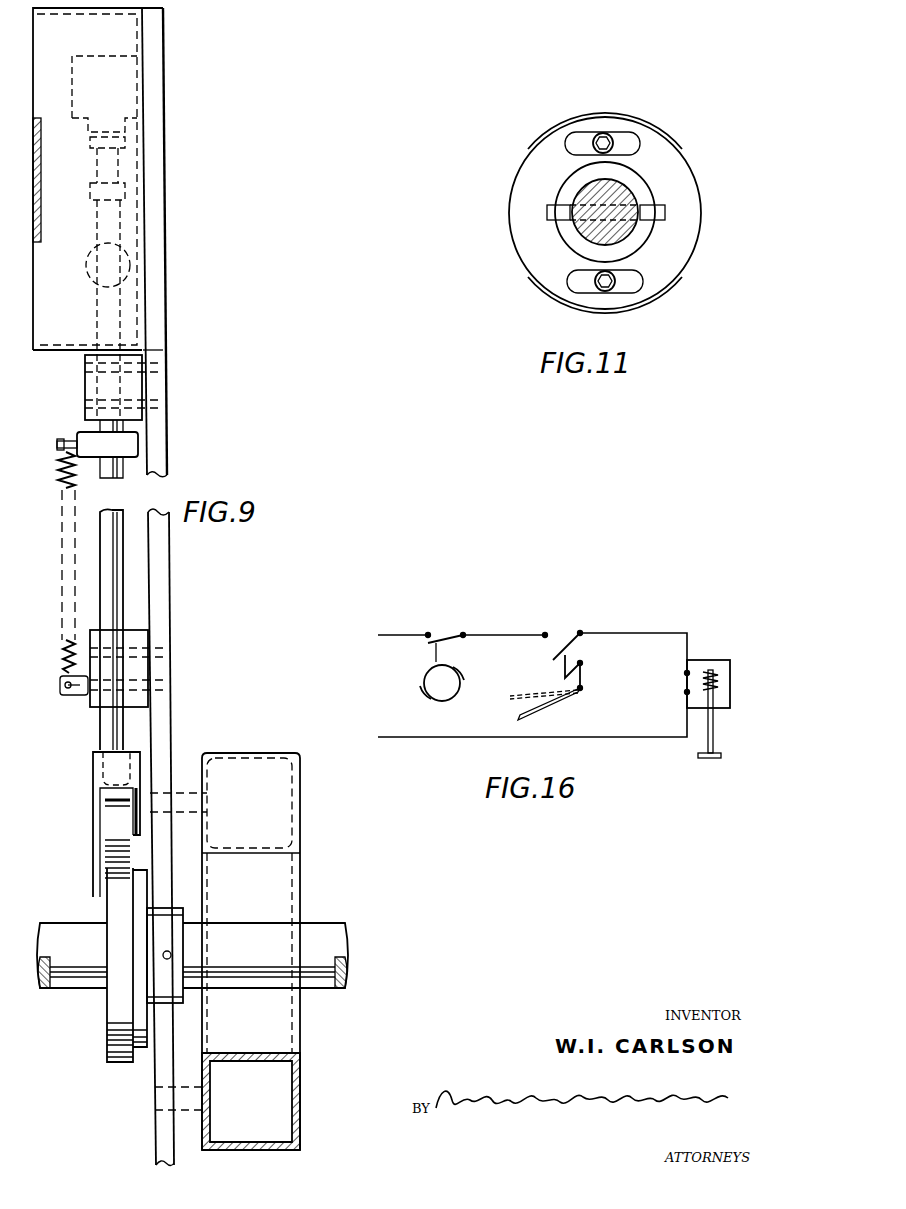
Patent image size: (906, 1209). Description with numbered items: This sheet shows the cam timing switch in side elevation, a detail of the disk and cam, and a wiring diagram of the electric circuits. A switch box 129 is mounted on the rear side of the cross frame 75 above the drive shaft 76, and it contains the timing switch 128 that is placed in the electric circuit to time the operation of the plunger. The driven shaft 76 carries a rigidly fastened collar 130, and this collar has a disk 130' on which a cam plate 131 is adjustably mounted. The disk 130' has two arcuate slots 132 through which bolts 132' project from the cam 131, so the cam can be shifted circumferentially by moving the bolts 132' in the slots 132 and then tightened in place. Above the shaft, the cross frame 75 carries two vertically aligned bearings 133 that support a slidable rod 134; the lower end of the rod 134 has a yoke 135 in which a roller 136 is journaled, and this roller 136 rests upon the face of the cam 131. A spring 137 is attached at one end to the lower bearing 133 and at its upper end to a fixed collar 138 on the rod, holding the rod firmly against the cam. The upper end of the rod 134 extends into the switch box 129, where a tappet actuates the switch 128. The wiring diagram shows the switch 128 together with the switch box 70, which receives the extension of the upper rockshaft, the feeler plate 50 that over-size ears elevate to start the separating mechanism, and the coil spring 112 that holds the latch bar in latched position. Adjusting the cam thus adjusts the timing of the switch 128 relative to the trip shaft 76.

In FIG. 9, the timing switch 128 is at (117, 87).
In FIG. 16, the timing switch 128 is at (440, 640).
In FIG. 9, the switch box 129 is at (165, 107).
In FIG. 9, the bearings 133 is at (92, 386).
In FIG. 9, the fixed collar 138 is at (88, 440).
In FIG. 9, the spring 137 is at (62, 482).
In FIG. 9, the slidable rod 134 is at (110, 560).
In FIG. 9, the cross frame 75 is at (165, 598).
In FIG. 9, the yoke 135 is at (100, 773).
In FIG. 9, the roller 136 is at (118, 827).
In FIG. 9, the cam plate 131 is at (120, 915).
In FIG. 11, the cam plate 131 is at (565, 118).
In FIG. 9, the collar 130 is at (199, 938).
In FIG. 11, the collar 130 is at (559, 245).
In FIG. 9, the disk 130' is at (131, 990).
In FIG. 11, the disk 130' is at (582, 213).
In FIG. 9, the drive shaft 76 is at (330, 945).
In FIG. 11, the drive shaft 76 is at (575, 218).
In FIG. 11, the arcuate slots 132 is at (646, 213).
In FIG. 11, the bolts 132' is at (602, 224).
In FIG. 16, the switch box 70 is at (568, 633).
In FIG. 16, the feeler plate 50 is at (560, 700).
In FIG. 16, the coil spring 112 is at (716, 680).